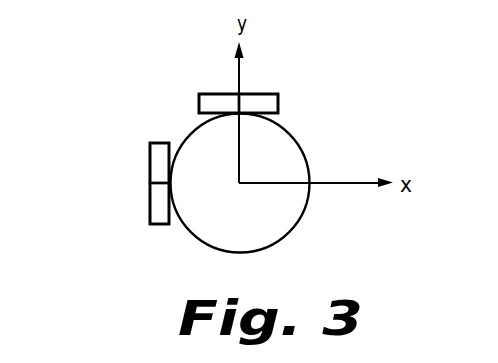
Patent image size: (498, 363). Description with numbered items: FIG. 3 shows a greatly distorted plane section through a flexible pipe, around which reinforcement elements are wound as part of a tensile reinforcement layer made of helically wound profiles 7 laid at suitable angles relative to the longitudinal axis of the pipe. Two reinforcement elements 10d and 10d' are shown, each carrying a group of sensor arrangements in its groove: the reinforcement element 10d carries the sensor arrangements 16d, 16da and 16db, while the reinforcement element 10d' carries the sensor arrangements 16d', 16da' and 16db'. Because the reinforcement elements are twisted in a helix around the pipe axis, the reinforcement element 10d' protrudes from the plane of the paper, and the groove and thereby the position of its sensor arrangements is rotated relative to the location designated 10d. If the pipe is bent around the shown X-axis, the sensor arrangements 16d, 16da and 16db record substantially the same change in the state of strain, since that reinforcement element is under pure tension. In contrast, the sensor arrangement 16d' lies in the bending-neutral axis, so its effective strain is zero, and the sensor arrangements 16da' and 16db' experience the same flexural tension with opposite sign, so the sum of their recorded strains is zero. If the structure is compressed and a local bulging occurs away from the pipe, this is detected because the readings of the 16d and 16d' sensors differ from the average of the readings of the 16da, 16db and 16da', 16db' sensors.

The helically wound profile 7 is at (278, 212).
The reinforcement element 10d is at (296, 72).
The sensor arrangement 16d is at (254, 71).
The sensor arrangement 16da is at (185, 68).
The sensor arrangement 16db is at (308, 115).
The reinforcement element 10d' is at (109, 189).
The sensor arrangement 16d' is at (108, 180).
The sensor arrangement 16da' is at (142, 243).
The sensor arrangement 16db' is at (130, 133).